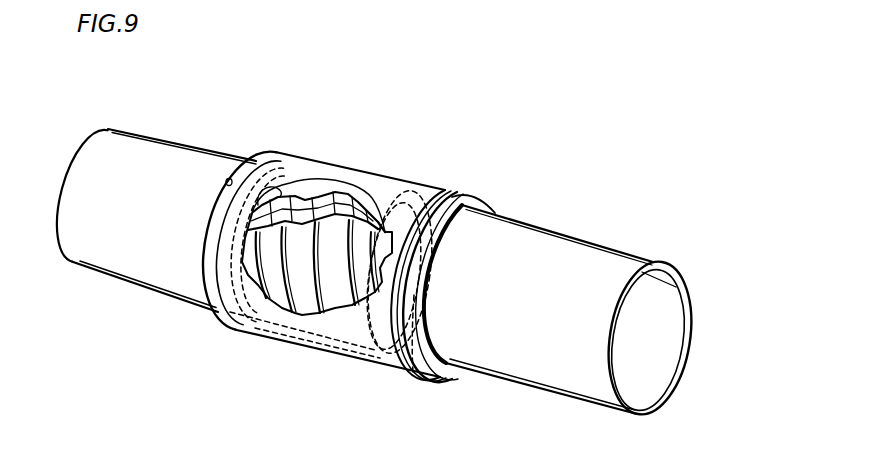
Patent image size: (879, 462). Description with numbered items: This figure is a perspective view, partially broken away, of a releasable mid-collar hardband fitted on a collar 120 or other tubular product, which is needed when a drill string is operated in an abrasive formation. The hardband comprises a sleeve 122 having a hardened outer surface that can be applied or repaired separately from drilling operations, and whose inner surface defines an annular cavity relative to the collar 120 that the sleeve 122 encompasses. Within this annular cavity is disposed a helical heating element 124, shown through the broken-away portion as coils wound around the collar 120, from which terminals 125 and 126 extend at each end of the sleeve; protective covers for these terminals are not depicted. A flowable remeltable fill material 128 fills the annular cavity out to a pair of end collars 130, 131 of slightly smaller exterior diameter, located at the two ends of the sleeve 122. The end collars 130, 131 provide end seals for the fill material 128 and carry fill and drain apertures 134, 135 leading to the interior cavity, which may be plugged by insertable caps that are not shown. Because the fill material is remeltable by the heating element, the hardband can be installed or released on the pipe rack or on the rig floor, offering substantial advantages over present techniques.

The collar 120 is at (592, 246).
The sleeve 122 is at (407, 184).
The helical heating element 124 is at (388, 250).
The terminal 125 is at (208, 258).
The terminal 126 is at (413, 373).
The flowable remeltable fill material 128 is at (333, 208).
The end collar 130 is at (217, 203).
The end collar 131 is at (480, 208).
The fill aperture 134 is at (229, 179).
The drain aperture 135 is at (449, 203).